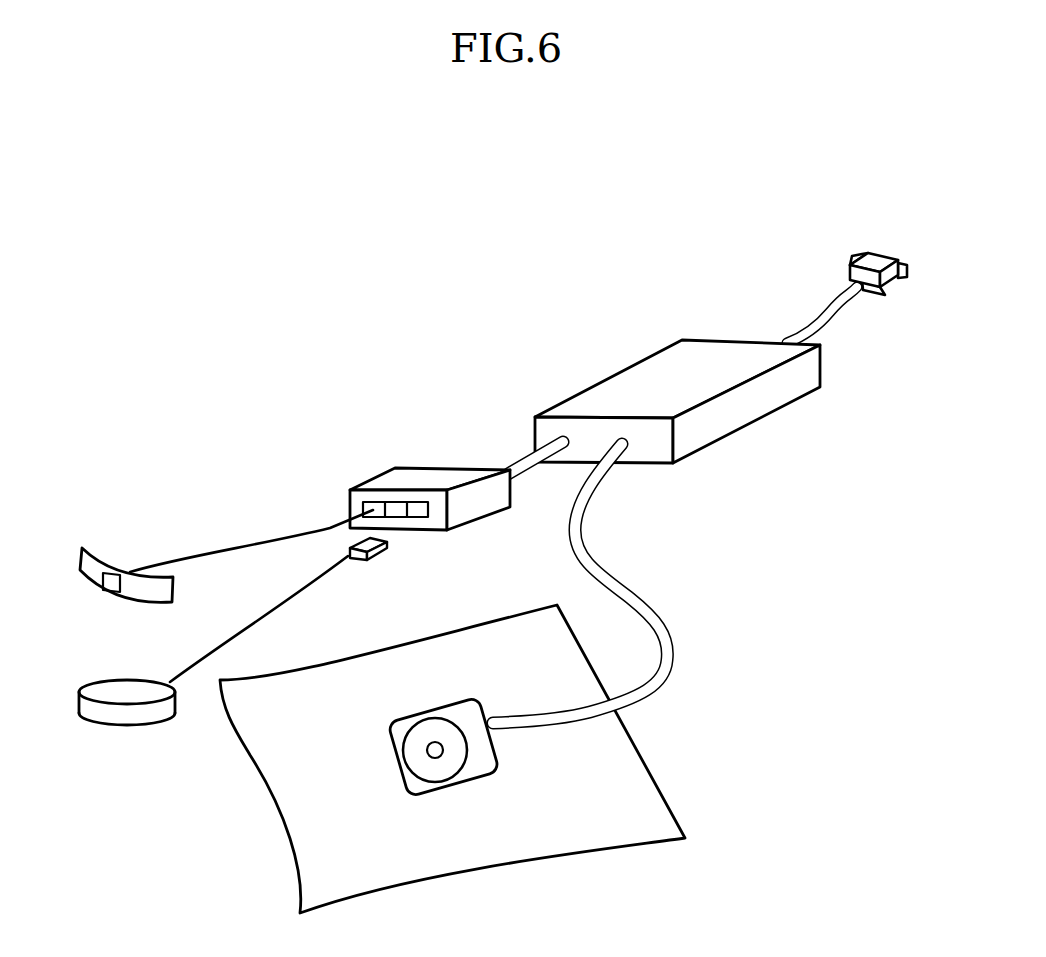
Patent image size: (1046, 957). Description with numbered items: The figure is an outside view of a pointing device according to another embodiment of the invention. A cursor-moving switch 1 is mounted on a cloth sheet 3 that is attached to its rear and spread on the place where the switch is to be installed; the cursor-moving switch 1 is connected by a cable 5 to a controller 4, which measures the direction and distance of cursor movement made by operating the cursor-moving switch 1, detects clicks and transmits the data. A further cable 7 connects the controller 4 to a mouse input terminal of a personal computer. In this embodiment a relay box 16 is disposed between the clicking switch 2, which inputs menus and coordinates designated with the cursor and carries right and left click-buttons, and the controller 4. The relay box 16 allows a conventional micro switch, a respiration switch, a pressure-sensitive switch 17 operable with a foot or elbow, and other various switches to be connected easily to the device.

The cursor-moving switch 1 is at (463, 778).
The clicking switch 2 is at (87, 565).
The cloth sheet 3 is at (643, 798).
The controller 4 is at (737, 423).
The cable 5 is at (673, 653).
The cable 7 is at (833, 325).
The relay box 16 is at (413, 475).
The pressure-sensitive switch 17 is at (100, 685).